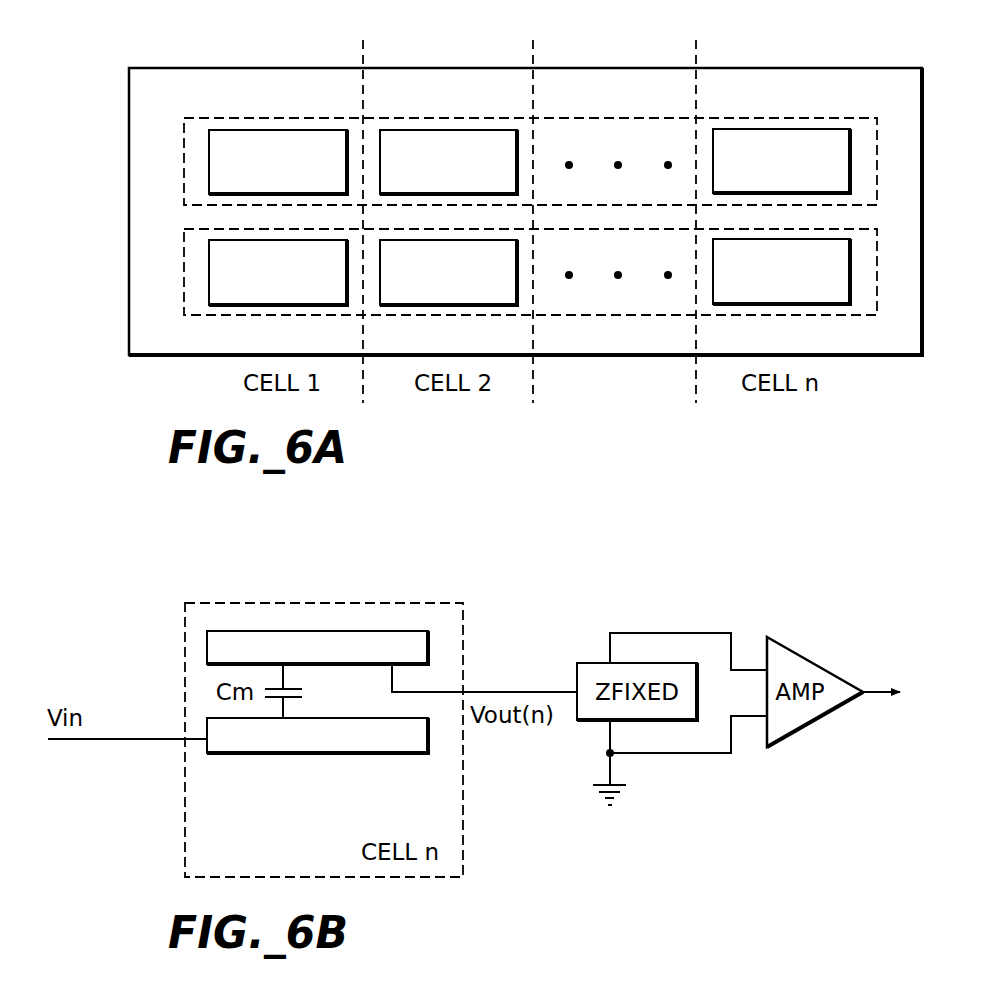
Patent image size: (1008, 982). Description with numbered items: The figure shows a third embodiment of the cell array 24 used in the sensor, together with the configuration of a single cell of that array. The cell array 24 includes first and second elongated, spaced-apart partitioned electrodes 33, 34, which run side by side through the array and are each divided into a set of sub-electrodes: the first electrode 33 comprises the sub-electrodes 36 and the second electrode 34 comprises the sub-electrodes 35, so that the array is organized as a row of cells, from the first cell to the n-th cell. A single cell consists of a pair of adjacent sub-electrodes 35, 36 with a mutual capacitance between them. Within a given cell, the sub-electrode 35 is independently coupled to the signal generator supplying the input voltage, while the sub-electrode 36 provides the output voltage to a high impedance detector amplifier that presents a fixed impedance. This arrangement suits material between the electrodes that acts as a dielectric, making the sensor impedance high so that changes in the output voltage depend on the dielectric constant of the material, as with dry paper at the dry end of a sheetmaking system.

In FIG. 6A, the cell array 24 is at (207, 42).
In FIG. 6A, the first elongated partitioned electrode 33 is at (558, 316).
In FIG. 6A, the second elongated partitioned electrode 34 is at (547, 116).
In FIG. 6A, the sub-electrode 35 is at (529, 161).
In FIG. 6B, the sub-electrode 35 is at (317, 735).
In FIG. 6A, the sub-electrode 36 is at (529, 272).
In FIG. 6B, the sub-electrode 36 is at (317, 647).